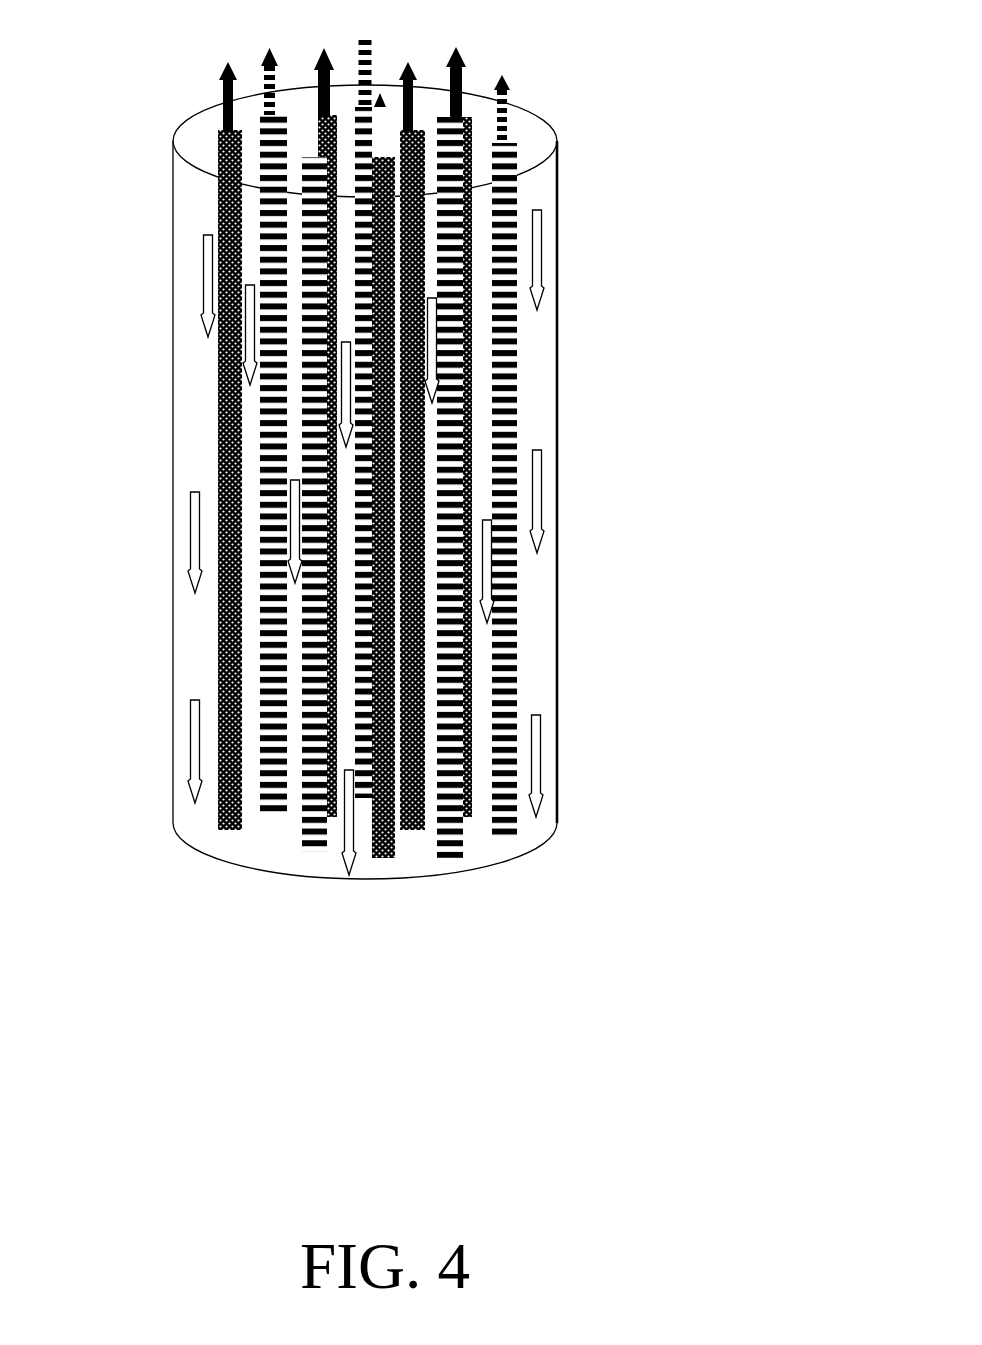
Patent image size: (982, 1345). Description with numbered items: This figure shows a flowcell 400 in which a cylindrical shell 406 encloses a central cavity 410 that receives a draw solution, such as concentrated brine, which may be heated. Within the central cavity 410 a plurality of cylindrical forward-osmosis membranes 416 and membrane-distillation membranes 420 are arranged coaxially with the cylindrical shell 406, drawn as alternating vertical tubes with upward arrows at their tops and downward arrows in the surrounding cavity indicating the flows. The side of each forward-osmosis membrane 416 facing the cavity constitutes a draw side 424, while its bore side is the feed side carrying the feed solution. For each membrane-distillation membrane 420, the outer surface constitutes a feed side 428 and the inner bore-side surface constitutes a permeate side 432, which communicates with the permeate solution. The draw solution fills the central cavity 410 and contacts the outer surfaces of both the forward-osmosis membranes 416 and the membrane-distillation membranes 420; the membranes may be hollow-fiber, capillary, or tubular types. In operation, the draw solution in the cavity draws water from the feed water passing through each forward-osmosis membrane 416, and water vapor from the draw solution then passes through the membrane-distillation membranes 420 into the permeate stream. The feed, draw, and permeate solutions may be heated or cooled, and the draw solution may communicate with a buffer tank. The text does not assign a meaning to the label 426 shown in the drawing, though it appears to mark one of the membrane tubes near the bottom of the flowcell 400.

The flowcell 400 is at (443, 501).
The cylindrical shell 406 is at (160, 328).
The central cavity 410 is at (535, 363).
The forward-osmosis membrane 416 is at (230, 840).
The membrane-distillation membrane 420 is at (455, 501).
The draw side 424 is at (212, 795).
The third type elongated element 426 is at (372, 857).
The feed side 428 is at (513, 603).
The permeate side 432 is at (281, 122).